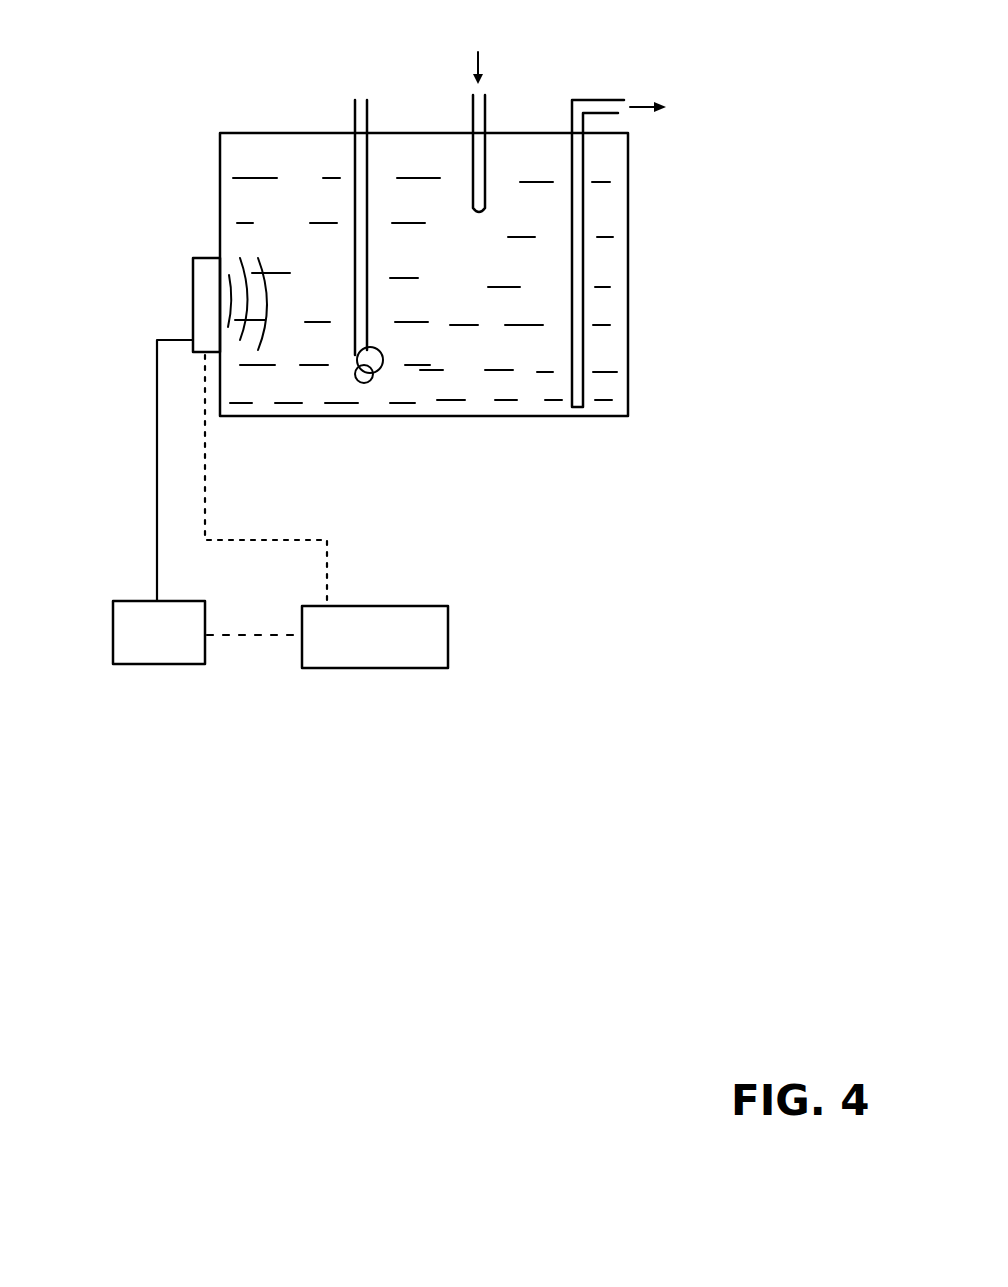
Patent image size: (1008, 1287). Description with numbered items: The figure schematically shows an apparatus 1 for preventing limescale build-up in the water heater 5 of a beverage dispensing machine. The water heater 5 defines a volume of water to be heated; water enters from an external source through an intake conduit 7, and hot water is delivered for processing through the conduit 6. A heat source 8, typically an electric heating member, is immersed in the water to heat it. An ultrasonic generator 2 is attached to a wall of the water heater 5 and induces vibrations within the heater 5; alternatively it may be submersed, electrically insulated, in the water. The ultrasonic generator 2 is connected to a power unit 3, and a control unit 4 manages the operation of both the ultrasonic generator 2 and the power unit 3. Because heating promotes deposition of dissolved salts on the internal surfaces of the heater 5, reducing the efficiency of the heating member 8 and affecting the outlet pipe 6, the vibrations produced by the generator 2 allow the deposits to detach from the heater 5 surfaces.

The apparatus 1 is at (212, 697).
The ultrasonic generator 2 is at (214, 316).
The power unit 3 is at (113, 640).
The control unit 4 is at (363, 668).
The water heater 5 is at (628, 342).
The conduit 6 is at (592, 102).
The intake conduit 7 is at (486, 112).
The heat source 8 is at (355, 117).